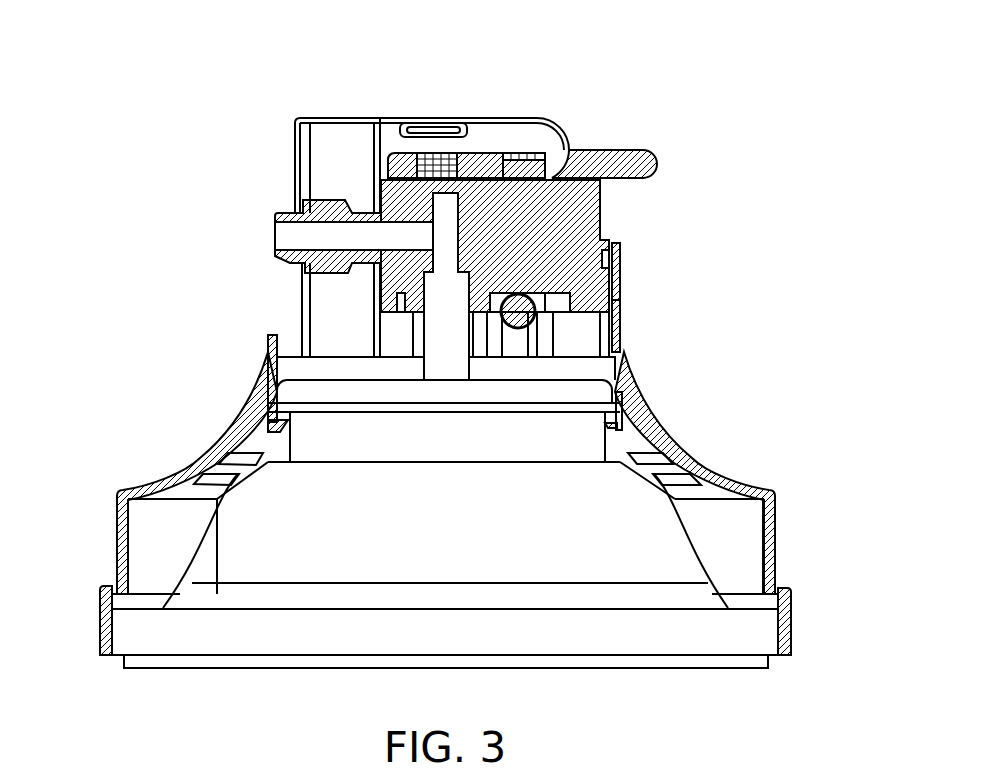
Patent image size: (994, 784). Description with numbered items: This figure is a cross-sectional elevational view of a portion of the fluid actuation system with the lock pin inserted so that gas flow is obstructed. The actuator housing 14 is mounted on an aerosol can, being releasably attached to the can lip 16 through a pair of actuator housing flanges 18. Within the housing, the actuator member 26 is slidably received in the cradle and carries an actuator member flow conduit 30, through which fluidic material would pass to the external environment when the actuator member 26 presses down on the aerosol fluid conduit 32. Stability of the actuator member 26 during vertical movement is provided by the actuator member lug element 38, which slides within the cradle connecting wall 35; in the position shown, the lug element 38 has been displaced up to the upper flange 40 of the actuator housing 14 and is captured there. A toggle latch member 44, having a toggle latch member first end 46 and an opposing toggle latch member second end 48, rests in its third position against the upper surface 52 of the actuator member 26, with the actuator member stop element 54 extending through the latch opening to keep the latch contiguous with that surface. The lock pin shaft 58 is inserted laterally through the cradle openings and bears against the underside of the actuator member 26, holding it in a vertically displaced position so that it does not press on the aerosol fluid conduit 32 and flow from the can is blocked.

The actuator housing 14 is at (768, 488).
The can lip 16 is at (430, 406).
The actuator housing flanges 18 is at (617, 433).
The actuator member 26 is at (604, 213).
The actuator member flow conduit 30 is at (287, 212).
The aerosol fluid conduit 32 is at (427, 327).
The cradle connecting wall 35 is at (620, 297).
The actuator member lug element 38 is at (616, 277).
The upper flange 40 is at (607, 230).
The toggle latch member 44 is at (601, 149).
The toggle latch member first end 46 is at (658, 165).
The toggle latch member second end 48 is at (392, 164).
The upper surface 52 is at (561, 160).
The actuator member stop element 54 is at (490, 155).
The lock pin shaft 58 is at (520, 328).